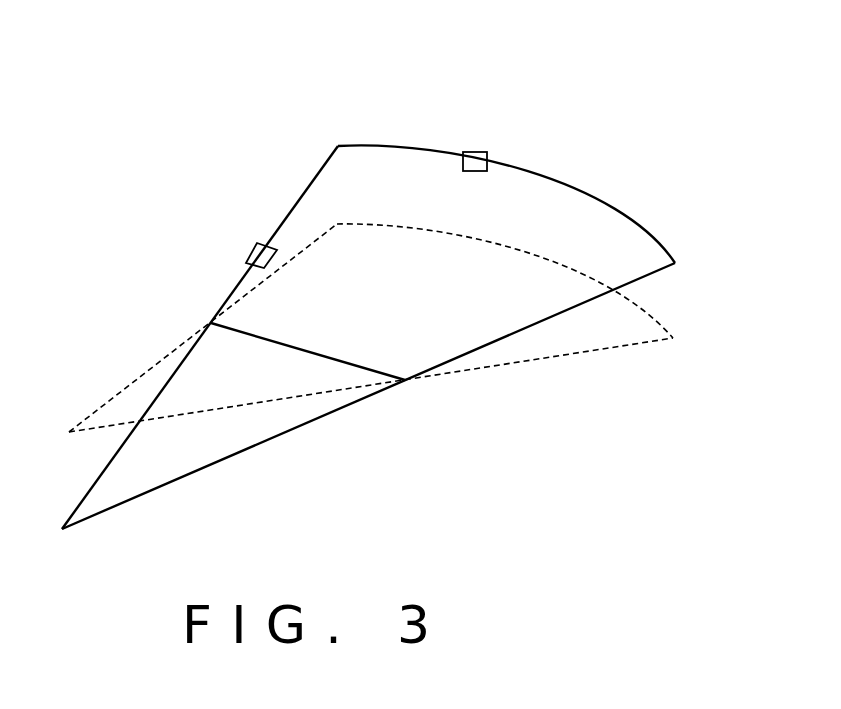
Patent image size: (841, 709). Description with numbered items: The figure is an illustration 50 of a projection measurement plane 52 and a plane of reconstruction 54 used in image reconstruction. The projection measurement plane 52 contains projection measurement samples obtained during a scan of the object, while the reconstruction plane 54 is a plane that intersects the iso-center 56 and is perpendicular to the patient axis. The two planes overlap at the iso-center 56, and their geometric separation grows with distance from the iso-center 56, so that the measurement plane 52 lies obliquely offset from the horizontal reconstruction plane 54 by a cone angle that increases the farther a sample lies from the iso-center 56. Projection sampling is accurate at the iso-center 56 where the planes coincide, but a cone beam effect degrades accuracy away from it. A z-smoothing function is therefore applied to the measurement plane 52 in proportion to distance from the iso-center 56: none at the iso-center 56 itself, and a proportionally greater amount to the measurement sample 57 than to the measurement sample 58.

The illustration 50 is at (367, 275).
The projection measurement plane 52 is at (303, 192).
The plane of reconstruction 54 is at (143, 375).
The iso-center 56 is at (318, 352).
The measurement sample 57 is at (476, 152).
The measurement sample 58 is at (247, 255).